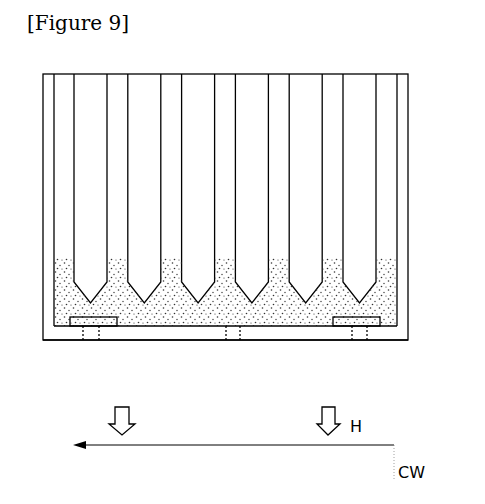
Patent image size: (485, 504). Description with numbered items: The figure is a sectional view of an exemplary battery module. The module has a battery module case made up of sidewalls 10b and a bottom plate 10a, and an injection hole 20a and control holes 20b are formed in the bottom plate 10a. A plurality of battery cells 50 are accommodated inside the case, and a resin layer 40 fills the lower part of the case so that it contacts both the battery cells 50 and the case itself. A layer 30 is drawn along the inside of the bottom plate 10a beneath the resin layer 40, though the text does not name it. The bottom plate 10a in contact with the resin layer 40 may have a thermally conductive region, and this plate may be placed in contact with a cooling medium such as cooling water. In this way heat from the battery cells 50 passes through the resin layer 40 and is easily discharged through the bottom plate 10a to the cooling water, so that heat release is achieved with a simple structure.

The bottom plate 10a is at (170, 342).
The sidewalls 10b is at (402, 220).
The injection hole 20a is at (233, 342).
The control holes 20b is at (91, 342).
The bottom plate layer 30 is at (385, 320).
The resin layer 40 is at (387, 275).
The battery cells 50 is at (376, 172).